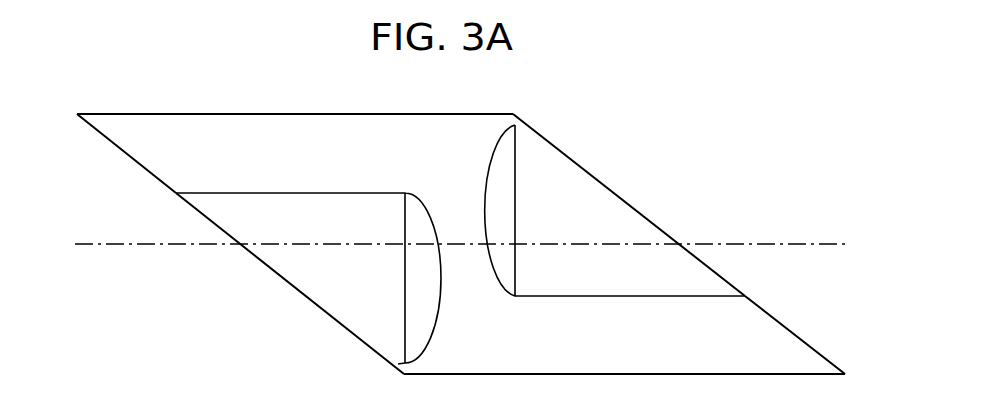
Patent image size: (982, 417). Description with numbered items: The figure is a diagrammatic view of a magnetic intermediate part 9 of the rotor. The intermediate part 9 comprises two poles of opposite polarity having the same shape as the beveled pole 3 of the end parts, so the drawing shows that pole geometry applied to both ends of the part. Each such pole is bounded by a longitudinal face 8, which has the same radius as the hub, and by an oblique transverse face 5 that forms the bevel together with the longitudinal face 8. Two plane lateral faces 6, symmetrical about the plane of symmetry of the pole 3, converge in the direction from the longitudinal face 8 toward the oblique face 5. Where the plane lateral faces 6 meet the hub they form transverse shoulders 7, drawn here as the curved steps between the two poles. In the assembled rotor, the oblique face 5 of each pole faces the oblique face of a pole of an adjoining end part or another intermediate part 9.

The beveled pole 3 is at (461, 235).
The oblique transverse face 5 is at (137, 162).
The plane lateral faces 6 is at (315, 278).
The transverse shoulders 7 is at (417, 324).
The longitudinal face 8 is at (193, 113).
The intermediate part 9 is at (323, 106).